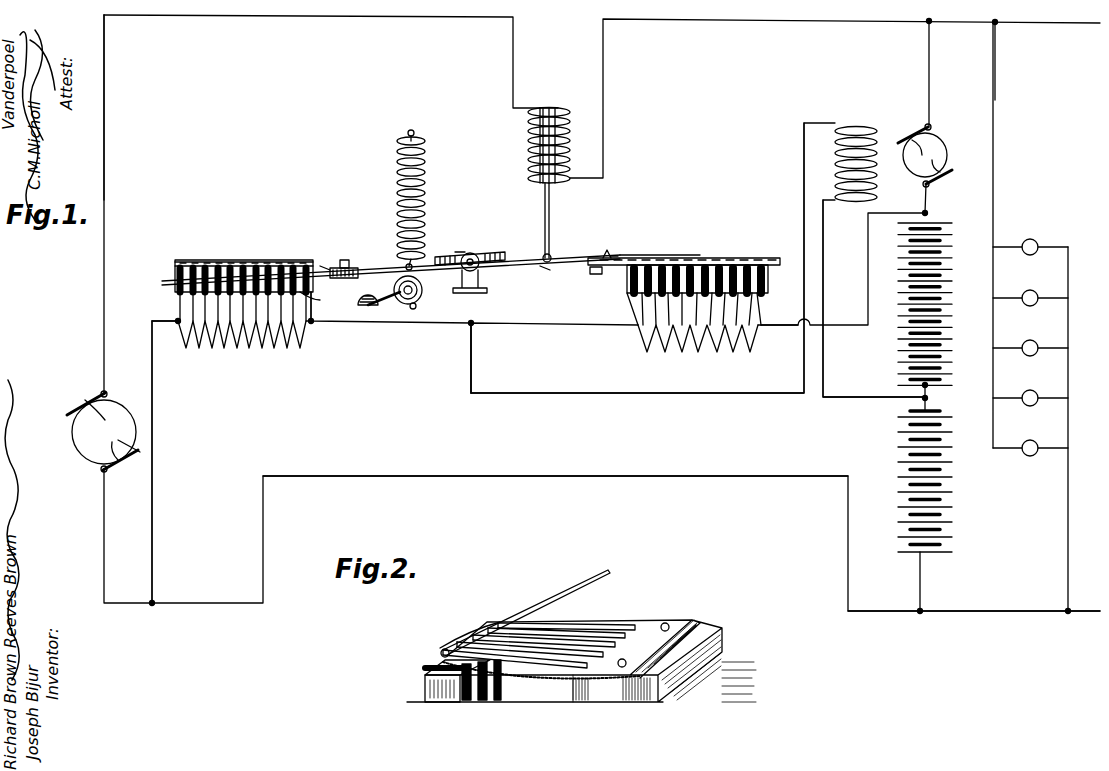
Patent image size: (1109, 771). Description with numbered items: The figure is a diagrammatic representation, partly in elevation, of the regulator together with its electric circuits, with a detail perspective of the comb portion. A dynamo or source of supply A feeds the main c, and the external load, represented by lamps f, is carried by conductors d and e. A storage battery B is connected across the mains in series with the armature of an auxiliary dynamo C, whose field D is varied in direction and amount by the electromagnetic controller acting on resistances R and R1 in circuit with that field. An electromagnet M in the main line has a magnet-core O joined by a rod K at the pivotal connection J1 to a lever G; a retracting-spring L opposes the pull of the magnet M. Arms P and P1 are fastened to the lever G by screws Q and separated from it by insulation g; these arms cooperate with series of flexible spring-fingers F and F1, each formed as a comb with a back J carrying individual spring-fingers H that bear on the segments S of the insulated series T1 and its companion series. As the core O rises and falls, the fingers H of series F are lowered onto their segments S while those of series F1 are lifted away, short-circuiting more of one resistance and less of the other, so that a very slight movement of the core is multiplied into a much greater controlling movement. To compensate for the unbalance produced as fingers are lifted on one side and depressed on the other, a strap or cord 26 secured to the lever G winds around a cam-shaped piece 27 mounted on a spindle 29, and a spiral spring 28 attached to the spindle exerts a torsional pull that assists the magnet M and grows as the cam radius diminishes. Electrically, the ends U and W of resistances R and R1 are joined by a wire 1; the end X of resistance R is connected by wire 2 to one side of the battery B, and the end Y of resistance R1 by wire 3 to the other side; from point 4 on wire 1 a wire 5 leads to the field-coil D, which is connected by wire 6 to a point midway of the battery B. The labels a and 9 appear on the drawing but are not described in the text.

In FIG. 1, the main c is at (104, 178).
In FIG. 1, the supply conductor a is at (946, 25).
In FIG. 1, the conductor d is at (1034, 25).
In FIG. 1, the auxiliary dynamo C is at (929, 162).
In FIG. 1, the dynamo A is at (42, 382).
In FIG. 1, the electromagnet M is at (528, 128).
In FIG. 1, the magnet-core O is at (528, 160).
In FIG. 1, the rod K is at (545, 200).
In FIG. 1, the retracting-spring L is at (396, 150).
In FIG. 1, the arm P is at (162, 283).
In FIG. 2, the arm P is at (585, 580).
In FIG. 1, the lever G is at (470, 252).
In FIG. 1, the spring-fingers H is at (470, 252).
In FIG. 2, the spring-fingers H is at (460, 645).
In FIG. 1, the series of spring-fingers F is at (245, 262).
In FIG. 2, the series of spring-fingers F is at (465, 638).
In FIG. 1, the series of spring-fingers F1 is at (665, 256).
In FIG. 1, the insulation g is at (612, 248).
In FIG. 1, the series of insulated segments T1 is at (170, 288).
In FIG. 1, the arm P1 is at (660, 258).
In FIG. 1, the screws Q is at (342, 260).
In FIG. 1, the strap 26 is at (360, 285).
In FIG. 1, the resistance R is at (240, 348).
In FIG. 1, the resistance R1 is at (698, 352).
In FIG. 1, the end of resistance R X is at (178, 321).
In FIG. 1, the segments S is at (650, 293).
In FIG. 2, the segments S is at (425, 672).
In FIG. 1, the end of resistance R U is at (311, 321).
In FIG. 1, the end of resistance R' W is at (636, 325).
In FIG. 1, the end of resistance R' Y is at (784, 318).
In FIG. 1, the spiral spring 28 is at (422, 295).
In FIG. 1, the cam-shaped piece 27 is at (368, 310).
In FIG. 1, the spindle 29 is at (405, 308).
In FIG. 1, the wire 1 is at (390, 315).
In FIG. 1, the pivotal connection J1 is at (541, 280).
In FIG. 1, the point 4 is at (473, 323).
In FIG. 1, the wire 5 is at (804, 173).
In FIG. 1, the wire 6 is at (236, 560).
In FIG. 1, the wire 3 is at (868, 283).
In FIG. 1, the wire 2 is at (152, 393).
In FIG. 1, the contact 9 is at (616, 244).
In FIG. 1, the field D is at (836, 126).
In FIG. 1, the storage battery B is at (898, 350).
In FIG. 1, the lamps f is at (1031, 239).
In FIG. 1, the conductor e is at (962, 610).
In FIG. 2, the back J is at (650, 635).